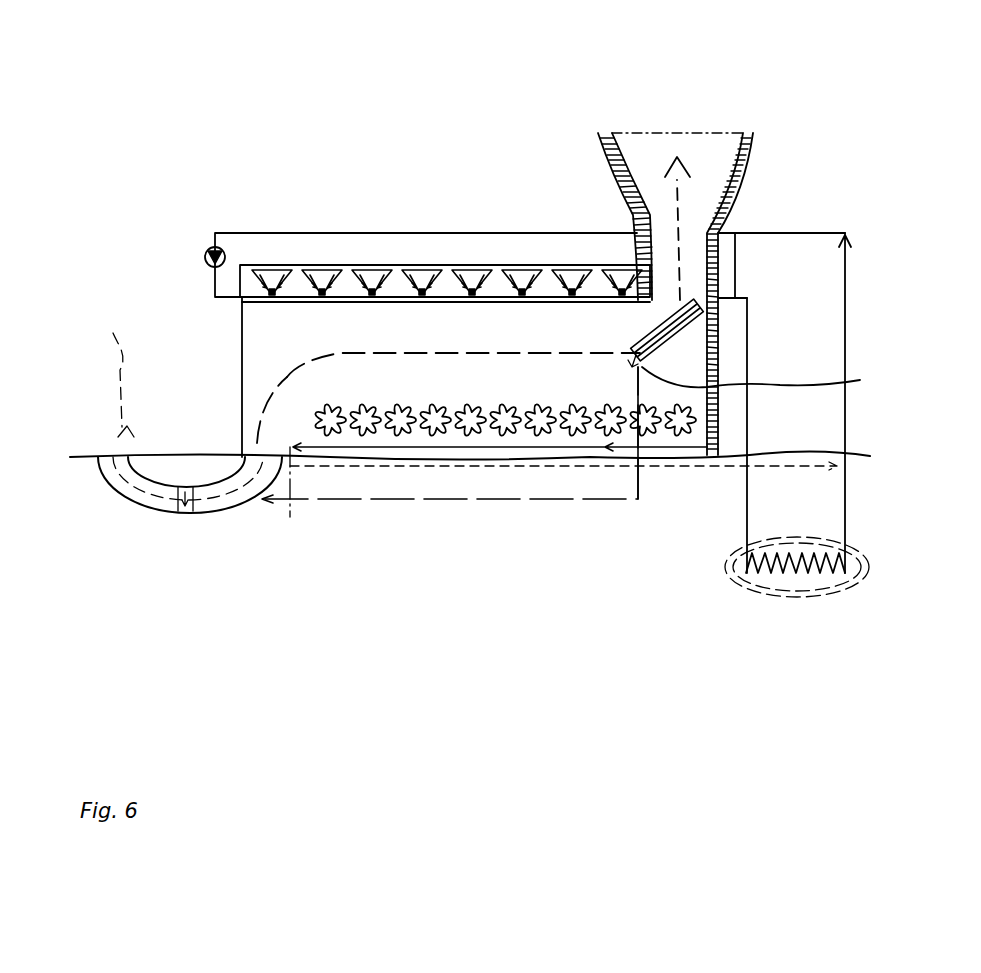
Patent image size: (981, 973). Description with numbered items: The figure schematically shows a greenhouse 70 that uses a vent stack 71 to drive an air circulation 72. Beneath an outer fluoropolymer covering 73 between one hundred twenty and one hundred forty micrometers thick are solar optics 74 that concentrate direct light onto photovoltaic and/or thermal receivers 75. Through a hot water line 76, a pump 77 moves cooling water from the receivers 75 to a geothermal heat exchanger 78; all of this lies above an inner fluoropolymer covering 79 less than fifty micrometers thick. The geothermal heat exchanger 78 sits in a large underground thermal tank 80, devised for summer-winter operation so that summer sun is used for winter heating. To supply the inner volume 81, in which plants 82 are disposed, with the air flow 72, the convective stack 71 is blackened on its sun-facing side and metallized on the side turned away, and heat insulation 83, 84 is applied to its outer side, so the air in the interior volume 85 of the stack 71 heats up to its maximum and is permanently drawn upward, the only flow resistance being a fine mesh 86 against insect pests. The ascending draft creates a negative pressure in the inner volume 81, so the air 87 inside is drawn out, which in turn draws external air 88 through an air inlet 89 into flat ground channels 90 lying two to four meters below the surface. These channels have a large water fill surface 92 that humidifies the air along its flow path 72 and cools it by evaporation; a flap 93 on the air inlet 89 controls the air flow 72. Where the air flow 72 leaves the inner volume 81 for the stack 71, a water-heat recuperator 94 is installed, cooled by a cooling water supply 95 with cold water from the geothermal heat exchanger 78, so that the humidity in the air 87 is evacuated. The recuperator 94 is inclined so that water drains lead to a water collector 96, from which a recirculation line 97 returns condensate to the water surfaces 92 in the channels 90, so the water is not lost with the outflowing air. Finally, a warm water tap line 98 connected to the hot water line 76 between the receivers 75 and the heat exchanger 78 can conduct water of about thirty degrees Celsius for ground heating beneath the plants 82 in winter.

The greenhouse 70 is at (186, 147).
The stack 71 is at (705, 158).
The air circulation 72 is at (683, 223).
The outer fluoropolymer covering 73 is at (240, 275).
The solar optics 74 is at (577, 265).
The photovoltaic and/or thermal receivers 75 is at (547, 298).
The hot water line 76 is at (747, 337).
The pump 77 is at (204, 249).
The geothermal heat exchanger 78 is at (798, 553).
The inner fluoropolymer covering 79 is at (252, 303).
The underground thermal tank 80 is at (738, 577).
The inner volume 81 is at (528, 386).
The plants 82 is at (430, 427).
The heat insulation 83 is at (618, 170).
The heat insulation 84 is at (753, 143).
The interior volume of the stack 85 is at (647, 150).
The fine mesh 86 is at (723, 133).
The air inside the greenhouse 87 is at (573, 392).
The external air 88 is at (114, 369).
The air inlet 89 is at (140, 450).
The flat ground channels 90 is at (122, 497).
The water fill surface 92 is at (215, 502).
The flap 93 is at (83, 460).
The water-heat recuperator 94 is at (632, 325).
The cooling water supply 95 is at (735, 260).
The water collector 96 is at (766, 383).
The recirculation line 97 is at (527, 502).
The warm water tap line 98 is at (747, 447).